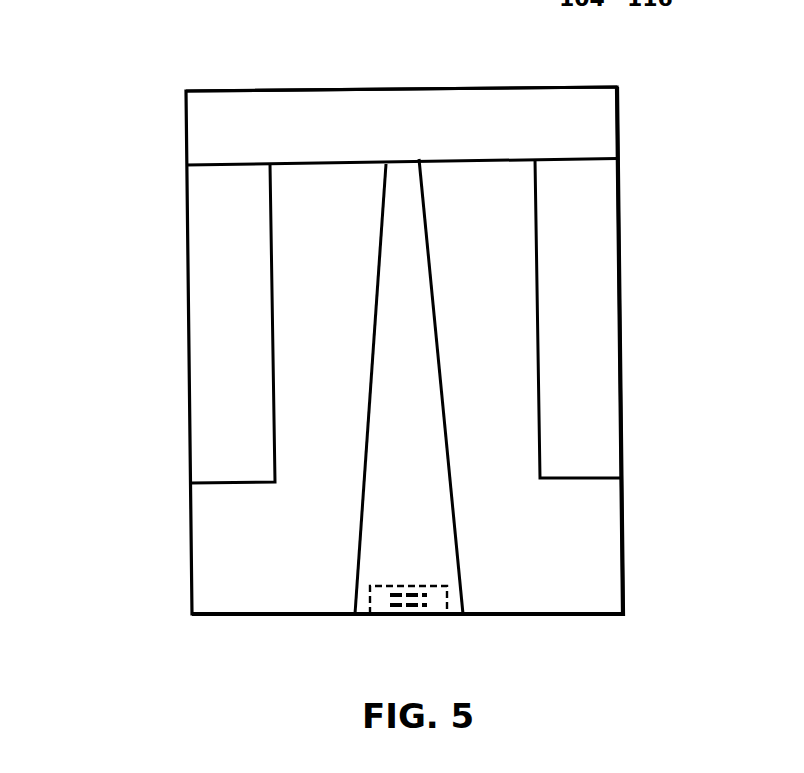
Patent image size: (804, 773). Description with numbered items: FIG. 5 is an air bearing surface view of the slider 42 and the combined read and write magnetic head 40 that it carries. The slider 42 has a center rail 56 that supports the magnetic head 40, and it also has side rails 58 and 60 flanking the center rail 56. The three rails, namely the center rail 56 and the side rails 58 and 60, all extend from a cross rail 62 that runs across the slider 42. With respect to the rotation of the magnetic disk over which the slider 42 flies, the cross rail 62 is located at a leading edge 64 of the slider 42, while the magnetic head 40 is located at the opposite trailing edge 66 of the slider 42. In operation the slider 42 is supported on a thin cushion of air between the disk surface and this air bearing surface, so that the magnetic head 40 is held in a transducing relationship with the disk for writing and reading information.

The magnetic head 40 is at (382, 618).
The slider 42 is at (165, 562).
The center rail 56 is at (392, 270).
The side rail 58 is at (200, 235).
The side rail 60 is at (593, 229).
The cross rail 62 is at (314, 98).
The leading edge 64 is at (467, 88).
The trailing edge 66 is at (525, 614).